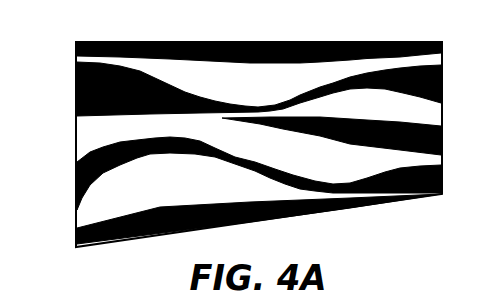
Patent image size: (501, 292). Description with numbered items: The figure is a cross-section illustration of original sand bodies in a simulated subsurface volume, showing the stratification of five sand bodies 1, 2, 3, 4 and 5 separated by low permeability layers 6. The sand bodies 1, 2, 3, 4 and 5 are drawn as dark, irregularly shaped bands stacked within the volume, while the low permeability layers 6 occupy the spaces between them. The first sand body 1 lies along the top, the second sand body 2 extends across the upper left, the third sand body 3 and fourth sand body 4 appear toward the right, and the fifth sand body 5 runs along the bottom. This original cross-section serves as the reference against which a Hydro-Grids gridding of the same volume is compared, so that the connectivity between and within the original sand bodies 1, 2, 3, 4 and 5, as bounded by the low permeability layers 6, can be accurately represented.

The sand body 1 is at (271, 64).
The sand body 2 is at (114, 100).
The sand body 3 is at (417, 149).
The sand body 4 is at (404, 191).
The sand body 5 is at (155, 229).
The low permeability layers 6 is at (87, 146).